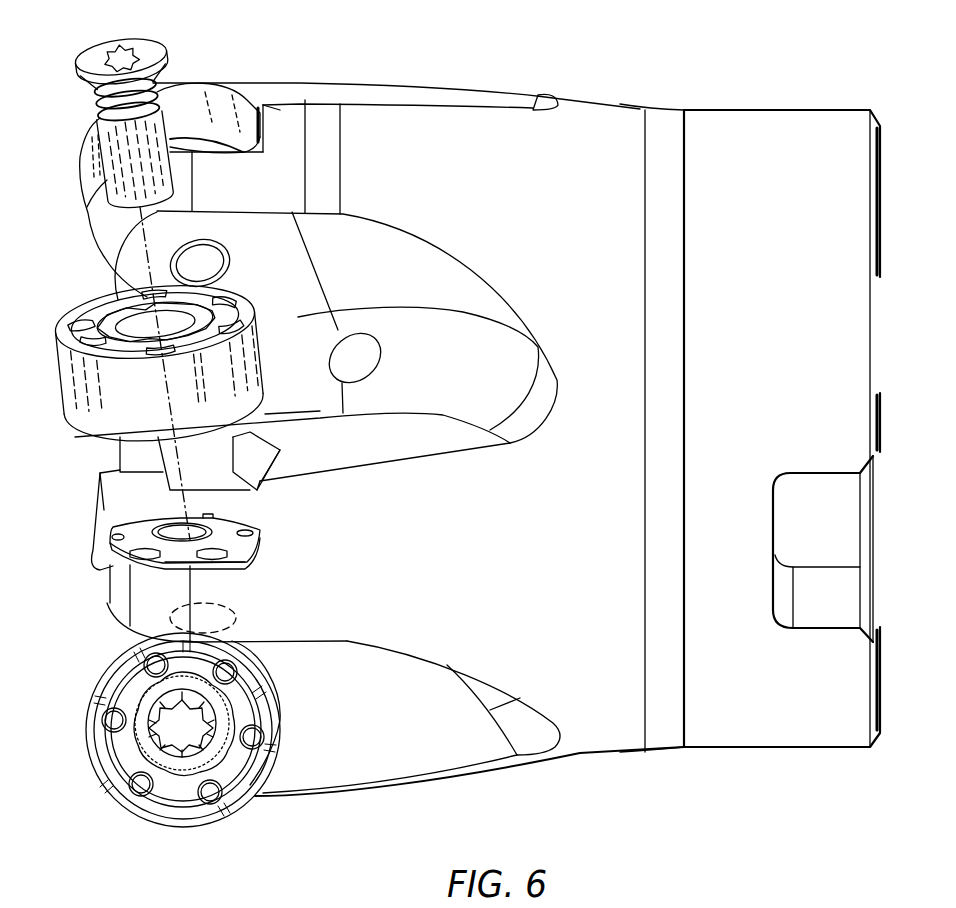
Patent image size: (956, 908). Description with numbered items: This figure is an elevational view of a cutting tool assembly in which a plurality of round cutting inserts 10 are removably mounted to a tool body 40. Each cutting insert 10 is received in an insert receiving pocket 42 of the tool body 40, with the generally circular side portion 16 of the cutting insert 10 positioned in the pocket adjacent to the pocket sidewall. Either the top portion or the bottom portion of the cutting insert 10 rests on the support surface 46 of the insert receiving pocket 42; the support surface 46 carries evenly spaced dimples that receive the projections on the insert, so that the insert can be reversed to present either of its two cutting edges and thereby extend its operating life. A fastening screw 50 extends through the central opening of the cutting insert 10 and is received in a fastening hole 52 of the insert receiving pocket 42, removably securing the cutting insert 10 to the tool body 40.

The tool body 40 is at (758, 103).
The cutting insert 10 is at (226, 96).
The generally circular side portion 16 is at (188, 97).
The fastening screw 50 is at (77, 72).
The insert receiving pocket 42 is at (231, 513).
The support surface 46 is at (187, 547).
The fastening hole 52 is at (100, 518).